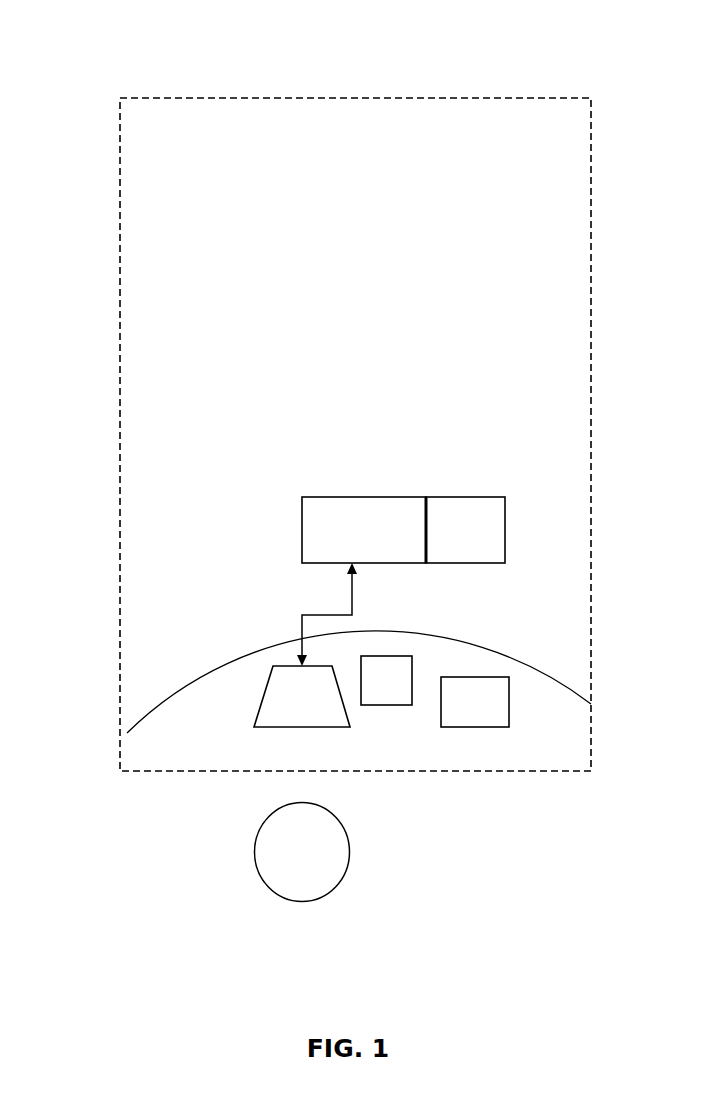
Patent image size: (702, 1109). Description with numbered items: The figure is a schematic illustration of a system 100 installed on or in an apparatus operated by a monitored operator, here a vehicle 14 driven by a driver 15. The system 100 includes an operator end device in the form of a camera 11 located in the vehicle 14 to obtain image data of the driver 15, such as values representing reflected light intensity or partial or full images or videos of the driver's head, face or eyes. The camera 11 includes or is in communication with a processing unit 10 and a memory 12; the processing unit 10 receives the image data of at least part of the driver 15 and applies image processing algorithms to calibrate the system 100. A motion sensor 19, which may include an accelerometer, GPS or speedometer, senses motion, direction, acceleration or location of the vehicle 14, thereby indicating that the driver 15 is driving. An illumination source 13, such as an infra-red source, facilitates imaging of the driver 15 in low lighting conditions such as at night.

The system 100 is at (341, 71).
The processing unit 10 is at (373, 551).
The memory 12 is at (471, 551).
The camera 11 is at (318, 717).
The illumination source 13 is at (408, 697).
The motion sensor 19 is at (484, 716).
The vehicle 14 is at (174, 674).
The driver 15 is at (353, 883).